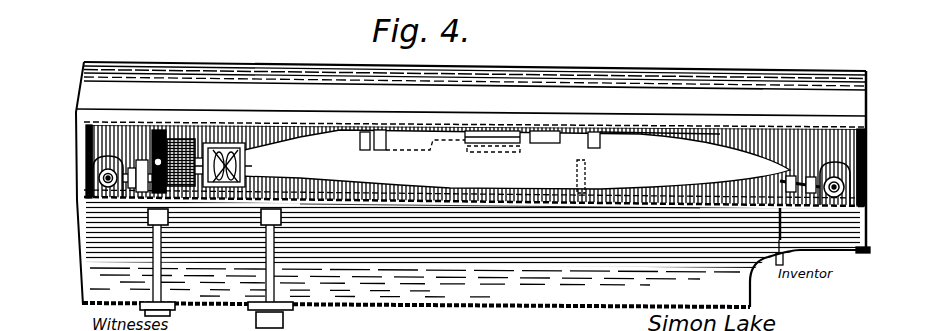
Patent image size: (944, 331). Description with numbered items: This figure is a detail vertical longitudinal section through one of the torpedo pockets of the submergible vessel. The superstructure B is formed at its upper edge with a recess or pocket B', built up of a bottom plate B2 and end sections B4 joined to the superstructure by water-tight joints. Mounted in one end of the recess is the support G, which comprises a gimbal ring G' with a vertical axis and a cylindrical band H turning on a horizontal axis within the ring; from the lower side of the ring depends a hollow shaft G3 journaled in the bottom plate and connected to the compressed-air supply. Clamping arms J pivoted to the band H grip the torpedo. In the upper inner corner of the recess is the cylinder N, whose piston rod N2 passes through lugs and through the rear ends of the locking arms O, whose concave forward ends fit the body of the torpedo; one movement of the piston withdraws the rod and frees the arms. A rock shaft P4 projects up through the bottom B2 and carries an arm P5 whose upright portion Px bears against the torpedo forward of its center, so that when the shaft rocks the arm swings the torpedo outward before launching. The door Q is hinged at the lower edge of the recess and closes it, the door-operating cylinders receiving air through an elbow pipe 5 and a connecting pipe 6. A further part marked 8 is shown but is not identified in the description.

The superstructure B is at (473, 175).
The recess or pocket B' is at (405, 119).
The bottom plate B2 is at (623, 213).
The end section B4 is at (107, 122).
The support G is at (188, 137).
The gimbal ring G' is at (161, 141).
The hollow shaft G3 is at (153, 276).
The cylindrical band H is at (187, 200).
The clamping arms J is at (224, 146).
The cylinder N is at (494, 133).
The piston rod N2 is at (557, 131).
The locking arms O is at (380, 150).
The upright portion Px is at (577, 167).
The rock shaft P4 is at (277, 252).
The arm P5 is at (438, 203).
The door Q is at (662, 131).
The elbow pipe 5 is at (783, 183).
The pipe 6 is at (777, 233).
The keel 8 is at (457, 303).